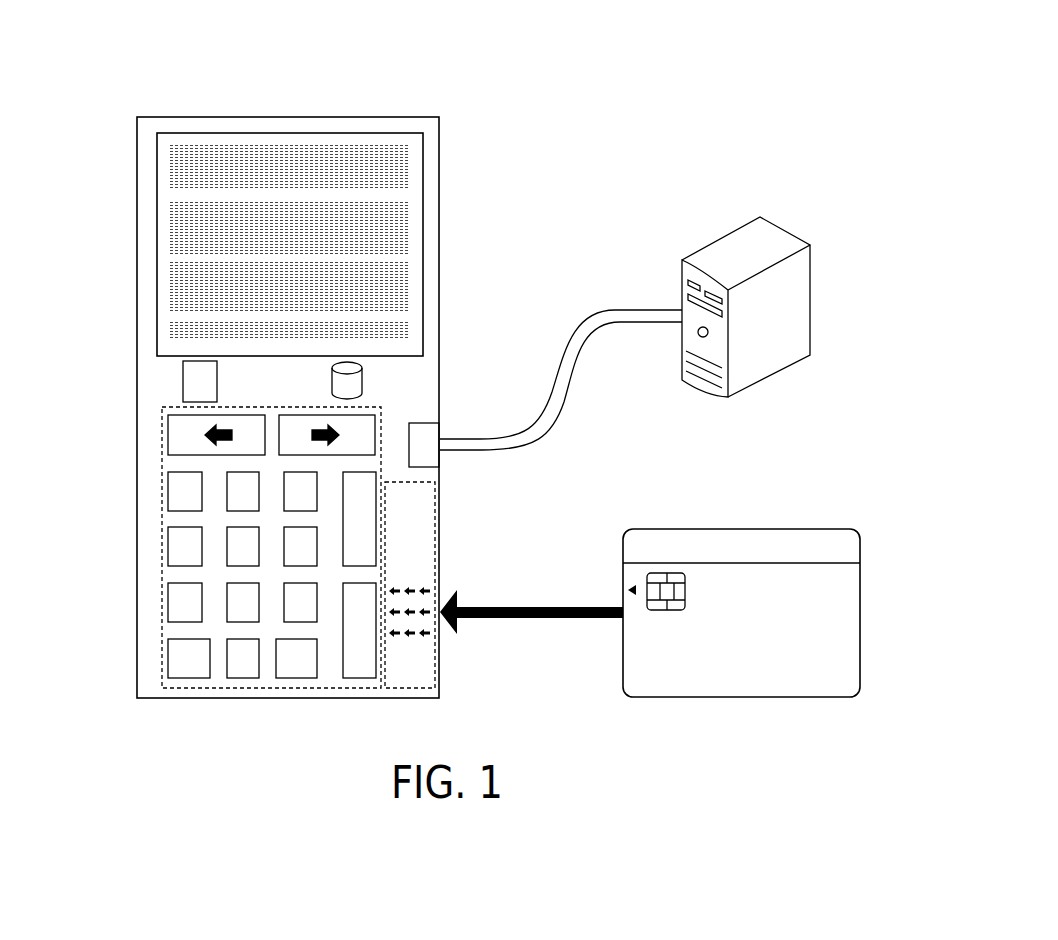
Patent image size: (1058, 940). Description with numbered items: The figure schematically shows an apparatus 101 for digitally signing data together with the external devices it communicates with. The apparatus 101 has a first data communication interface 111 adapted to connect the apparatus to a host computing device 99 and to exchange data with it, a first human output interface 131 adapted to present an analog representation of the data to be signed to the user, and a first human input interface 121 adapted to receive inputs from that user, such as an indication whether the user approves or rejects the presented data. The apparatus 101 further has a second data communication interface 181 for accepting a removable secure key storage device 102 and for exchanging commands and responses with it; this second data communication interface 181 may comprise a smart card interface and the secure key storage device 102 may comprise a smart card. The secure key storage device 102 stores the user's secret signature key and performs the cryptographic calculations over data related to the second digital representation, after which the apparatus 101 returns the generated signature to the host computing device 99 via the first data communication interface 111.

The apparatus for digitally signing data 101 is at (284, 117).
The first human output interface 131 is at (423, 183).
The first human input interface 121 is at (160, 455).
The first data communication interface 111 is at (423, 423).
The second data communication interface 181 is at (440, 578).
The host computing device 99 is at (743, 251).
The removable secure key storage device 102 is at (693, 529).